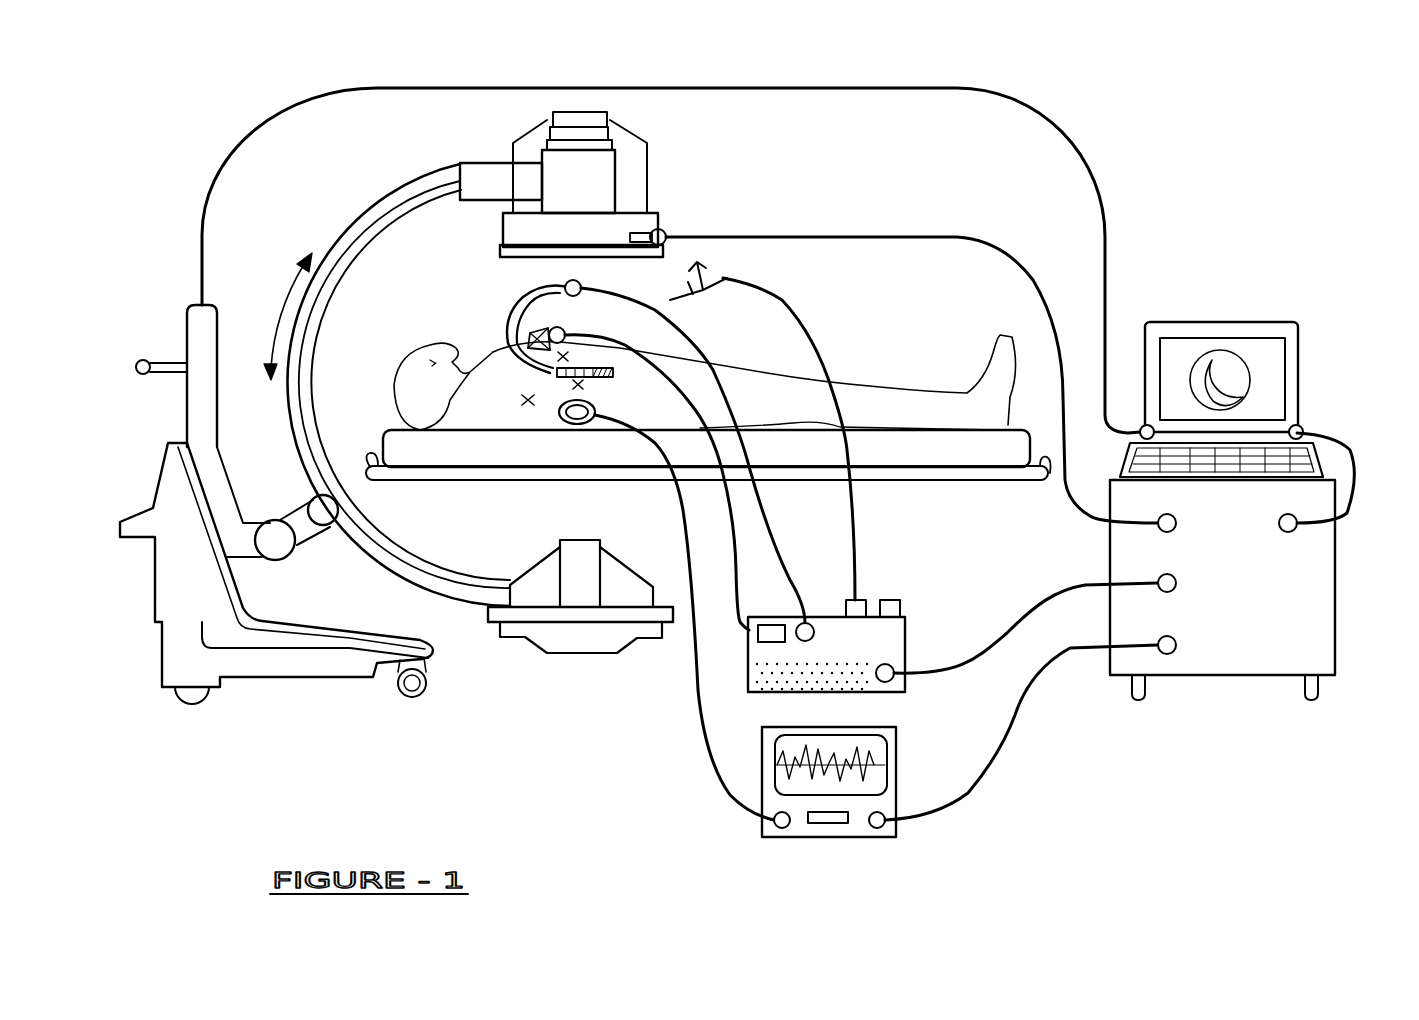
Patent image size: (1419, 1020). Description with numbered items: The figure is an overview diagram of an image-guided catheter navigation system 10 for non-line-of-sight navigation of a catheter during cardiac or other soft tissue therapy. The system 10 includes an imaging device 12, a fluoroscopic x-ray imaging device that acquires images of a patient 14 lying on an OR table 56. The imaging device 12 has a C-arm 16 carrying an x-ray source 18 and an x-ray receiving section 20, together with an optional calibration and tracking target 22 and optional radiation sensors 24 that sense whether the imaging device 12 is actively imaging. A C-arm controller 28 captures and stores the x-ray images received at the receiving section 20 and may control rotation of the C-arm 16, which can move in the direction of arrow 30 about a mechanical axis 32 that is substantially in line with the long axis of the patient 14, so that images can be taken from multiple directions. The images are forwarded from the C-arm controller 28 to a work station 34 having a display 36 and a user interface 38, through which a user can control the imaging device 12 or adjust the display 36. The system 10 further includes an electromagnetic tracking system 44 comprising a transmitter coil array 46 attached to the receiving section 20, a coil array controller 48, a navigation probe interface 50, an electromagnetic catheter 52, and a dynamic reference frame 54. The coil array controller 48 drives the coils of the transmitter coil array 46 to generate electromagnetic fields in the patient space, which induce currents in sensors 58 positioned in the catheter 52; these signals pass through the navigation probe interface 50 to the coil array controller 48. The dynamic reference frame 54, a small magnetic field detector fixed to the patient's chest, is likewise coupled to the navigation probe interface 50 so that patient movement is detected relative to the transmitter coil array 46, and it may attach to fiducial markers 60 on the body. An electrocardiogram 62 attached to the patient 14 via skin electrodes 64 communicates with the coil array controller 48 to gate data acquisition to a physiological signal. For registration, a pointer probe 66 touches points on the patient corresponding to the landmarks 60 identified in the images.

The image-guided catheter navigation system 10 is at (1203, 140).
The imaging device 12 is at (705, 163).
The patient 14 is at (390, 387).
The C-arm 16 is at (347, 245).
The x-ray source 18 is at (577, 572).
The x-ray receiving section 20 is at (632, 145).
The calibration and tracking target 22 is at (518, 228).
The radiation sensors 24 is at (680, 218).
The C-arm controller 28 is at (187, 323).
The arrow 30 is at (287, 315).
The mechanical axis 32 is at (303, 520).
The work station 34 is at (1230, 322).
The display 36 is at (1260, 387).
The user interface 38 is at (1322, 458).
The electromagnetic tracking system 44 is at (805, 291).
The transmitter coil array 46 is at (668, 246).
The coil array controller 48 is at (1227, 680).
The navigation probe interface 50 is at (907, 638).
The electromagnetic catheter 52 is at (522, 296).
The dynamic reference frame 54 is at (528, 333).
The OR table 56 is at (1007, 480).
The sensors 58 is at (613, 375).
The fiducial markers 60 is at (523, 405).
The electrocardiogram 62 is at (842, 837).
The skin electrodes 64 is at (595, 420).
The pointer probe 66 is at (710, 293).